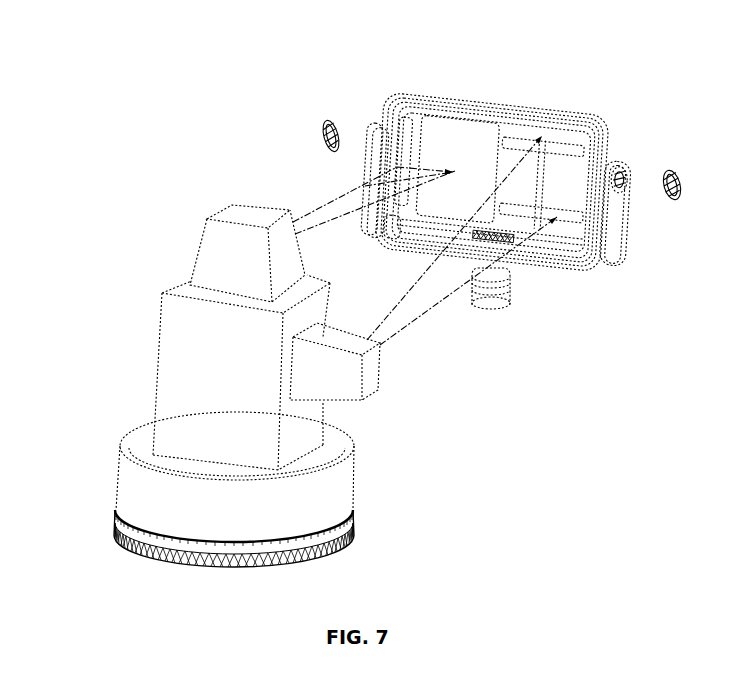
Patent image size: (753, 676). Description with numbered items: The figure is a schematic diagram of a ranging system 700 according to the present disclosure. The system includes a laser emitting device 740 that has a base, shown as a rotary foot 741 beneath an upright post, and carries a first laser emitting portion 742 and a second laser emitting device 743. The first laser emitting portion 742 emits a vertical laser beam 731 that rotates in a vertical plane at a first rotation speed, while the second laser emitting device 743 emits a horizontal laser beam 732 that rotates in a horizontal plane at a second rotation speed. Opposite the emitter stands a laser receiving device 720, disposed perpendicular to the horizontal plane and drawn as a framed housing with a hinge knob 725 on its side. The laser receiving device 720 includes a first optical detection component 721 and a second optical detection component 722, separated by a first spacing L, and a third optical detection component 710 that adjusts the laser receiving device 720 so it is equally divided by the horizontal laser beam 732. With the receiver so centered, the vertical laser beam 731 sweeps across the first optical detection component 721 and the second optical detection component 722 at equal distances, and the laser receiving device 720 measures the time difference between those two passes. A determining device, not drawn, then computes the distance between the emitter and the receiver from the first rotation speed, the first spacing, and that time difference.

The ranging system 700 is at (540, 50).
The third optical detection component 710 is at (407, 120).
The laser receiving device 720 is at (577, 240).
The first optical detection component 721 is at (562, 222).
The second optical detection component 722 is at (563, 150).
The hinge knob 725 is at (626, 192).
The vertical laser beam 731 is at (430, 310).
The horizontal laser beam 732 is at (343, 193).
The laser emitting device 740 is at (200, 382).
The rotary base with dial 741 is at (165, 528).
The first laser emitting portion 742 is at (347, 390).
The second laser emitting device 743 is at (227, 217).